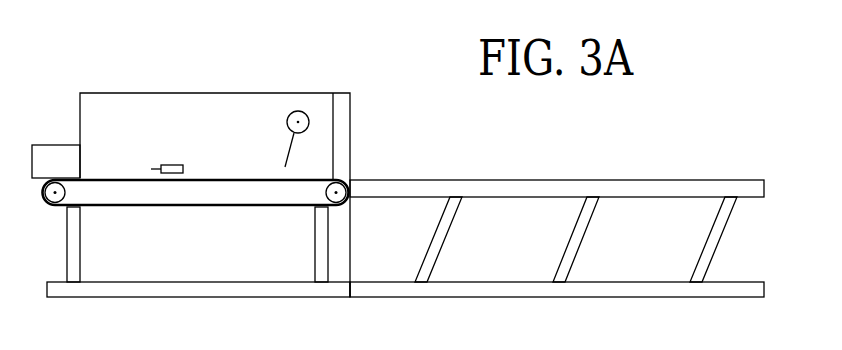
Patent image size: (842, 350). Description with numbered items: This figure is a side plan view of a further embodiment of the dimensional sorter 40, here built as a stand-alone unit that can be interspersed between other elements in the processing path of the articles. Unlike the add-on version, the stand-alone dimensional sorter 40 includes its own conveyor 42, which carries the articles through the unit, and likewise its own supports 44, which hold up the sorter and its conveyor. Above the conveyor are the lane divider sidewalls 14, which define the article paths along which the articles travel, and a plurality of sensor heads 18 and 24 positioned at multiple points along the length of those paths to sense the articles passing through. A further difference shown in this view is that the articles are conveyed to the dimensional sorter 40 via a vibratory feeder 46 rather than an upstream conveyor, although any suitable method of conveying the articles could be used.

The lane divider sidewall 14 is at (132, 93).
The sensor head 18 is at (300, 110).
The sensor head 24 is at (172, 165).
The dimensional sorter 40 is at (252, 70).
The conveyor 42 is at (46, 206).
The supports 44 is at (80, 265).
The vibratory feeder 46 is at (518, 180).